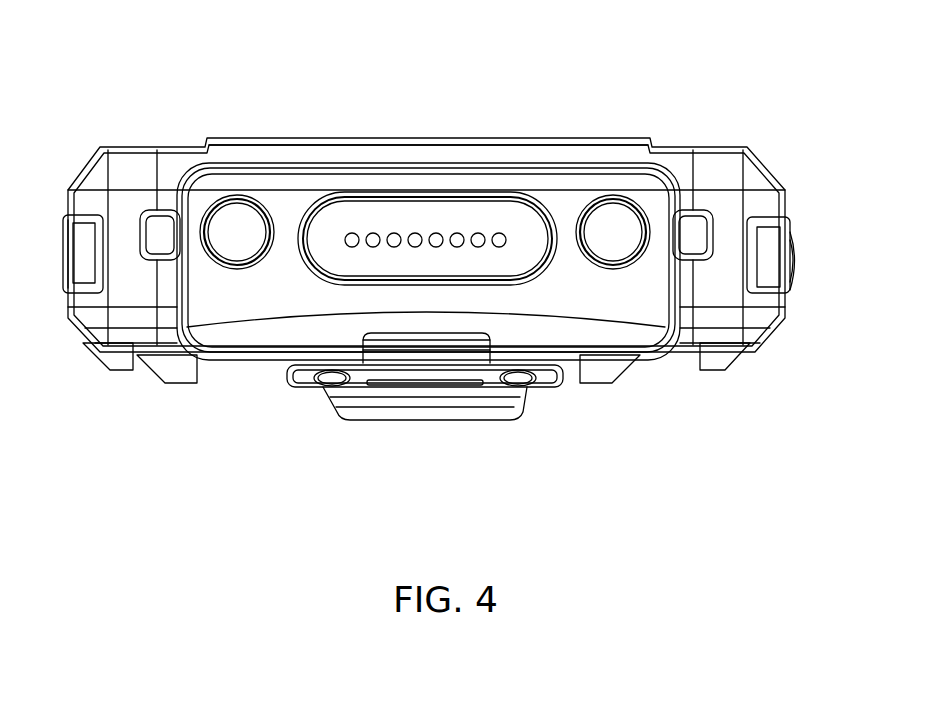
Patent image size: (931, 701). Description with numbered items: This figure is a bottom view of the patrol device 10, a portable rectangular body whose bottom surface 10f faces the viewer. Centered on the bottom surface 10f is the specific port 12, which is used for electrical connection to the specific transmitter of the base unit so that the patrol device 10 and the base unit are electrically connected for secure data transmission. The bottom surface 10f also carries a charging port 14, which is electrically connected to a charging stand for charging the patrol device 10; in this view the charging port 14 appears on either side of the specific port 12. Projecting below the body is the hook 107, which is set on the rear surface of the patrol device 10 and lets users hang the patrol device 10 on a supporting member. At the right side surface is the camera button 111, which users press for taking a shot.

The patrol device 10 is at (673, 147).
The bottom surface 10f is at (207, 193).
The specific port 12 is at (432, 218).
The charging port 14 is at (245, 218).
The hook 107 is at (423, 413).
The camera button 111 is at (793, 262).